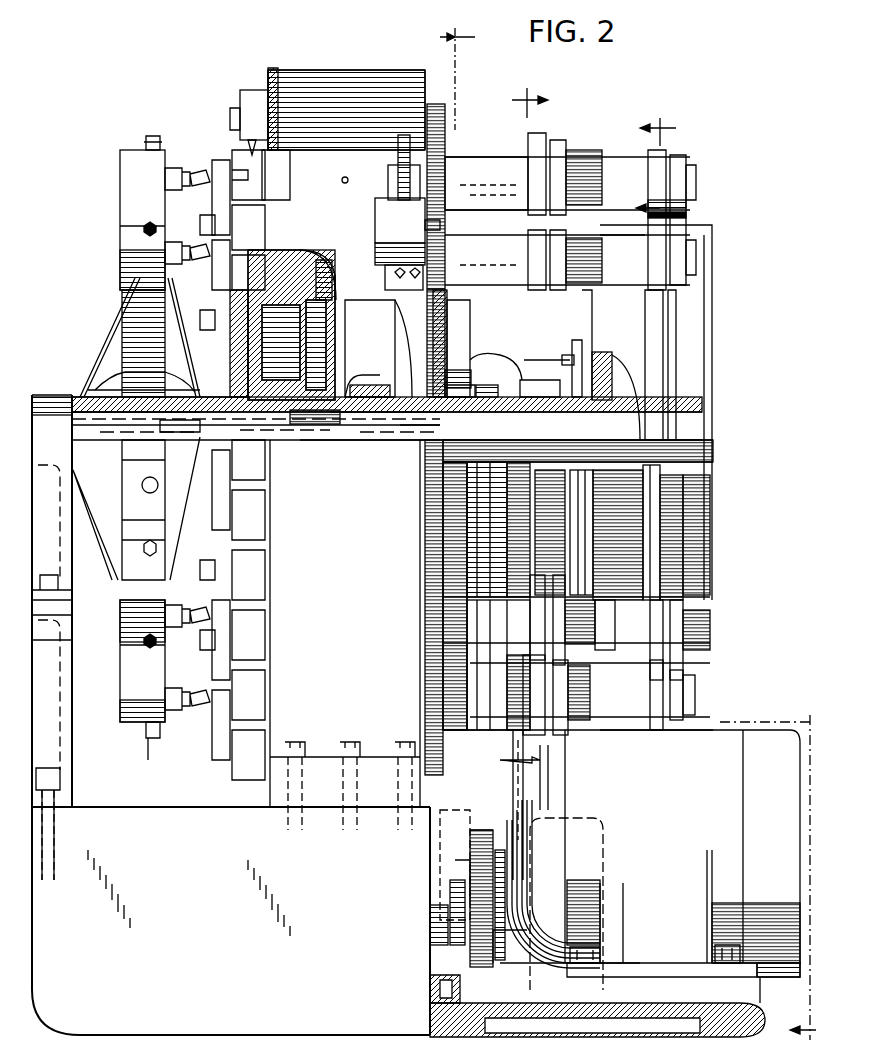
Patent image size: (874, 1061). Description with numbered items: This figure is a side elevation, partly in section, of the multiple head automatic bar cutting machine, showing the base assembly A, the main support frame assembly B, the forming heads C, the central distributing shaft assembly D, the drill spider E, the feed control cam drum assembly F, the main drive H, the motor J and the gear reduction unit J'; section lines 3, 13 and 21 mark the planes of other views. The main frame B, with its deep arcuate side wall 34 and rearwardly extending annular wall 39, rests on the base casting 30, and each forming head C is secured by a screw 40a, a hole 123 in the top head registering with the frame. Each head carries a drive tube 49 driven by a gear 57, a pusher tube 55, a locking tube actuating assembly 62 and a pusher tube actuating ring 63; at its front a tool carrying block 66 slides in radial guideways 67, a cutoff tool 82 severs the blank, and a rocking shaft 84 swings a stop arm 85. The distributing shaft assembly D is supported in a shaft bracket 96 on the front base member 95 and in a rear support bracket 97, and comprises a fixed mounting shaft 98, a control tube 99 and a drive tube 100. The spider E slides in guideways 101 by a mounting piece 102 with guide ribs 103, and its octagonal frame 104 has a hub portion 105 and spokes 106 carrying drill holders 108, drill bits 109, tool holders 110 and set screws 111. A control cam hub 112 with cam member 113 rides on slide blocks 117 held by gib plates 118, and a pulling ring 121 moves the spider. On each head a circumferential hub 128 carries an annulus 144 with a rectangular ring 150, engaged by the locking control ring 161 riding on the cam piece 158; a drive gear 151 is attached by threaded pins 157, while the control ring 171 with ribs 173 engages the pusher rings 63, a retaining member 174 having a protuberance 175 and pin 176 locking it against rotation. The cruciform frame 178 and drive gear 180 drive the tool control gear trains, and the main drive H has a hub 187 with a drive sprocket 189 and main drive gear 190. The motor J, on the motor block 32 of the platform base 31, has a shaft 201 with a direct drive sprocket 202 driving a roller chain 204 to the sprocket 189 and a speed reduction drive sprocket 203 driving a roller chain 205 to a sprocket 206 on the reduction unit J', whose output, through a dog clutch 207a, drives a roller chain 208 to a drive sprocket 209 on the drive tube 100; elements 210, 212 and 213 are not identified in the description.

The section line 3- 3 is at (628, 534).
The section line 13- 13 is at (649, 162).
The section line 21- 21 is at (524, 427).
The base casting 30 is at (315, 1020).
The platform base 31 is at (520, 1020).
The motor block 32 is at (648, 980).
The deep arcuate side wall 34 is at (362, 80).
The annular wall 39 is at (336, 290).
The screw 40a is at (342, 176).
The drive tube 49 is at (492, 165).
The pusher tube 55 is at (690, 180).
The gear 57 is at (440, 104).
The locking tube actuating assembly 62 is at (545, 136).
The pusher tube actuating ring 63 is at (694, 126).
The tool carrying block 66 is at (240, 92).
The radial guideways 67 is at (262, 95).
The cutoff tool 82 is at (268, 205).
The rocking shaft 84 is at (208, 222).
The stop arm 85 is at (222, 170).
The front distributing shaft base member 95 is at (70, 772).
The shaft bracket 96 is at (48, 408).
The rear support bracket 97 is at (550, 800).
The fixed mounting shaft 98 is at (395, 415).
The control tube 99 is at (372, 420).
The drive tube 100 is at (418, 440).
The guideways 101 is at (170, 415).
The mounting piece 102 is at (250, 400).
The guide ribs 103 is at (130, 415).
The octagonal frame 104 is at (108, 310).
The hub portion 105 is at (130, 395).
The spokes 106 is at (110, 540).
The drill holder 108 is at (128, 210).
The drill bit 109 is at (192, 166).
The tool holder 110 is at (122, 172).
The set screw 111 is at (156, 136).
The control cam hub 112 is at (340, 320).
The circumferential cam member 113 is at (305, 315).
The slide blocks 117 is at (306, 420).
The gib plates 118 is at (348, 397).
The pulling ring 121 is at (248, 375).
The hole 123 is at (320, 266).
The circumferential hub 128 is at (588, 160).
The annulus 144 is at (570, 352).
The rectangular ring 150 is at (566, 142).
The drive gear 151 is at (546, 355).
The threaded pins 157 is at (596, 352).
The circumferential cam piece 158 is at (592, 312).
The locking control ring 161 is at (586, 340).
The control ring 171 is at (706, 300).
The circumferential ribs 173 is at (676, 330).
The retaining member 174 is at (685, 158).
The depending protuberance 175 is at (680, 206).
The pin 176 is at (680, 222).
The cruciform frame 178 is at (392, 397).
The drive gear 180 is at (412, 397).
The hub 187 is at (458, 380).
The drive sprocket 189 is at (456, 370).
The main drive gear 190 is at (446, 304).
The shaft 201 is at (470, 830).
The direct drive sprocket 202 is at (455, 860).
The speed reduction drive sprocket 203 is at (552, 815).
The roller chain 204 is at (440, 556).
The roller chain 205 is at (440, 945).
The sprocket 206 is at (445, 962).
The positive dog clutch 207a is at (430, 930).
The roller chain 208 is at (480, 513).
The drive sprocket 209 is at (492, 380).
The tool holder 210 is at (378, 200).
The screw 212 is at (445, 224).
The stud 213 is at (406, 136).
The base assembly A is at (200, 1000).
The main support frame assembly B is at (345, 42).
The forming heads C is at (490, 140).
The central distributing shaft assembly D is at (320, 458).
The drill spider E is at (62, 322).
The feed control cam drum assembly F is at (738, 352).
The main drive H is at (454, 320).
The motor J is at (705, 824).
The gear reduction unit J' is at (571, 860).